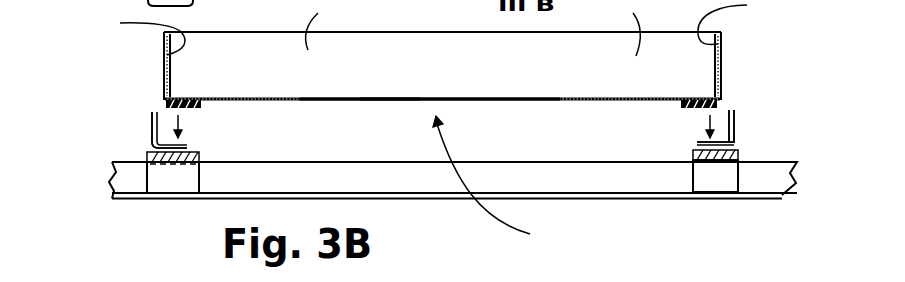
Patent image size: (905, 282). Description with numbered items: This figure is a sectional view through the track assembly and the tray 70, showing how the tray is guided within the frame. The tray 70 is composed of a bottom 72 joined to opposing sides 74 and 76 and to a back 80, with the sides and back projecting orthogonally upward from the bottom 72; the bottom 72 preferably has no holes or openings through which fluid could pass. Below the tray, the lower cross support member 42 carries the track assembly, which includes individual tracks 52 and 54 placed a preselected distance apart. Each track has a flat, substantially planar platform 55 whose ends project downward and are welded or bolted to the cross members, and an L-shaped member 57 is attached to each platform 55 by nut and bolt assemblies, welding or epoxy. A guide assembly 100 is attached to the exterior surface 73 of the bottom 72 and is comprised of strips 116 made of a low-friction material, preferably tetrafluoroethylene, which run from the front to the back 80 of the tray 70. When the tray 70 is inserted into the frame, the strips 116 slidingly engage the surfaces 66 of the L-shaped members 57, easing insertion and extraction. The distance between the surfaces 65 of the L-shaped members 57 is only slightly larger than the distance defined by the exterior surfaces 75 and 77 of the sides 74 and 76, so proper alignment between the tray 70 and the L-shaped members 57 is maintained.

The lower cross support member 42 is at (773, 180).
The track 52 is at (153, 130).
The track 54 is at (735, 112).
The platform 55 is at (147, 154).
The L-shaped member 57 is at (198, 152).
The surface of L-shaped member 65 is at (152, 110).
The surface of L-shaped member 66 is at (186, 150).
The tray 70 is at (200, 72).
The bottom 72 is at (488, 96).
The exterior surface 73 is at (402, 102).
The side 74 is at (138, 34).
The exterior surface 75 is at (167, 53).
The side 76 is at (736, 22).
The exterior surface 77 is at (723, 55).
The back 80 is at (473, 28).
The guide assembly 100 is at (501, 180).
The strips 116 is at (166, 106).